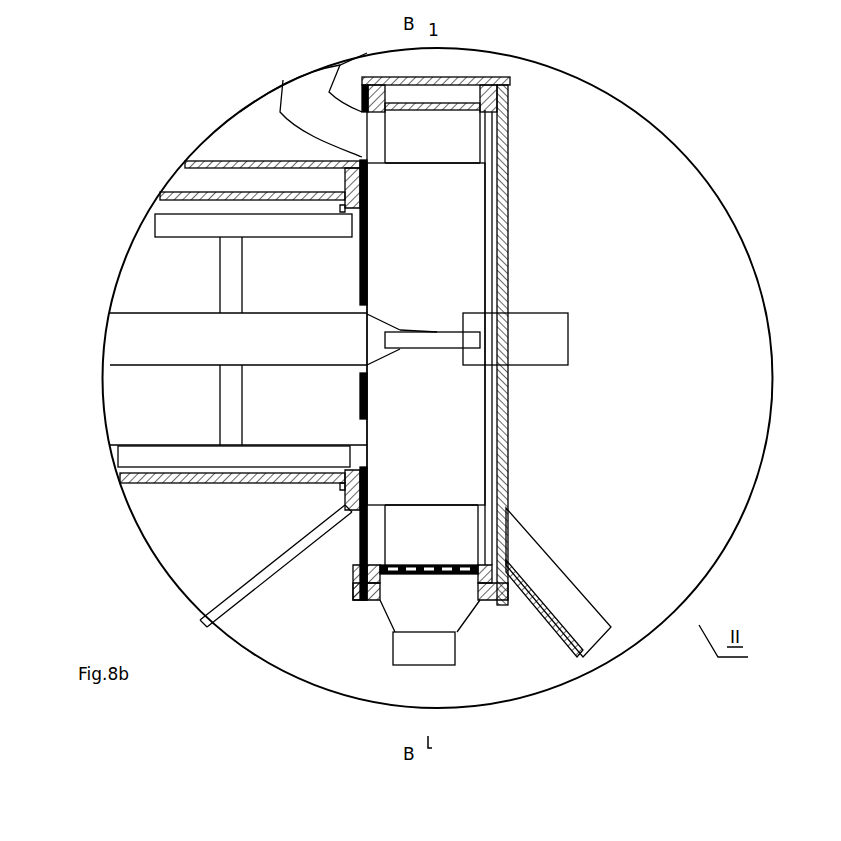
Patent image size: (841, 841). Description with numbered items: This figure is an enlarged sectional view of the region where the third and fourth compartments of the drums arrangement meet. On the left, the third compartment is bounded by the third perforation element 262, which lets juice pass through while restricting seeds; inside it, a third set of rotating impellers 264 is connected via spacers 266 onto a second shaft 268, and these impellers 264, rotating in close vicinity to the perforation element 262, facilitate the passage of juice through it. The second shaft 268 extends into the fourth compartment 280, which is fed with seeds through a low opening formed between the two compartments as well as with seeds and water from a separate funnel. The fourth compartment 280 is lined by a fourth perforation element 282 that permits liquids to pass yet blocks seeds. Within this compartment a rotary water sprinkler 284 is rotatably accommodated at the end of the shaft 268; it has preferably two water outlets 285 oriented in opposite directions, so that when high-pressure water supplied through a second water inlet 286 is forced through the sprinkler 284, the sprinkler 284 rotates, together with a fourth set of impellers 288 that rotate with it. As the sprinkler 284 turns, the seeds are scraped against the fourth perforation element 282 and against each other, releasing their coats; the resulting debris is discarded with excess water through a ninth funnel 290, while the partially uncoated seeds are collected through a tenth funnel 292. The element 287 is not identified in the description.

The third perforation element 262 is at (182, 192).
The third set of rotating impellers 264 is at (157, 227).
The spacers 266 is at (230, 286).
The second shaft 268 is at (125, 335).
The fourth compartment 280 is at (508, 88).
The fourth perforation element 282 is at (457, 103).
The rotary water sprinkler 284 is at (470, 224).
The water outlets 285 is at (430, 163).
The second water inlet 286 is at (562, 337).
The coupling 287 is at (390, 363).
The fourth set of impellers 288 is at (437, 332).
The ninth funnel 290 is at (432, 618).
The tenth funnel 292 is at (580, 623).